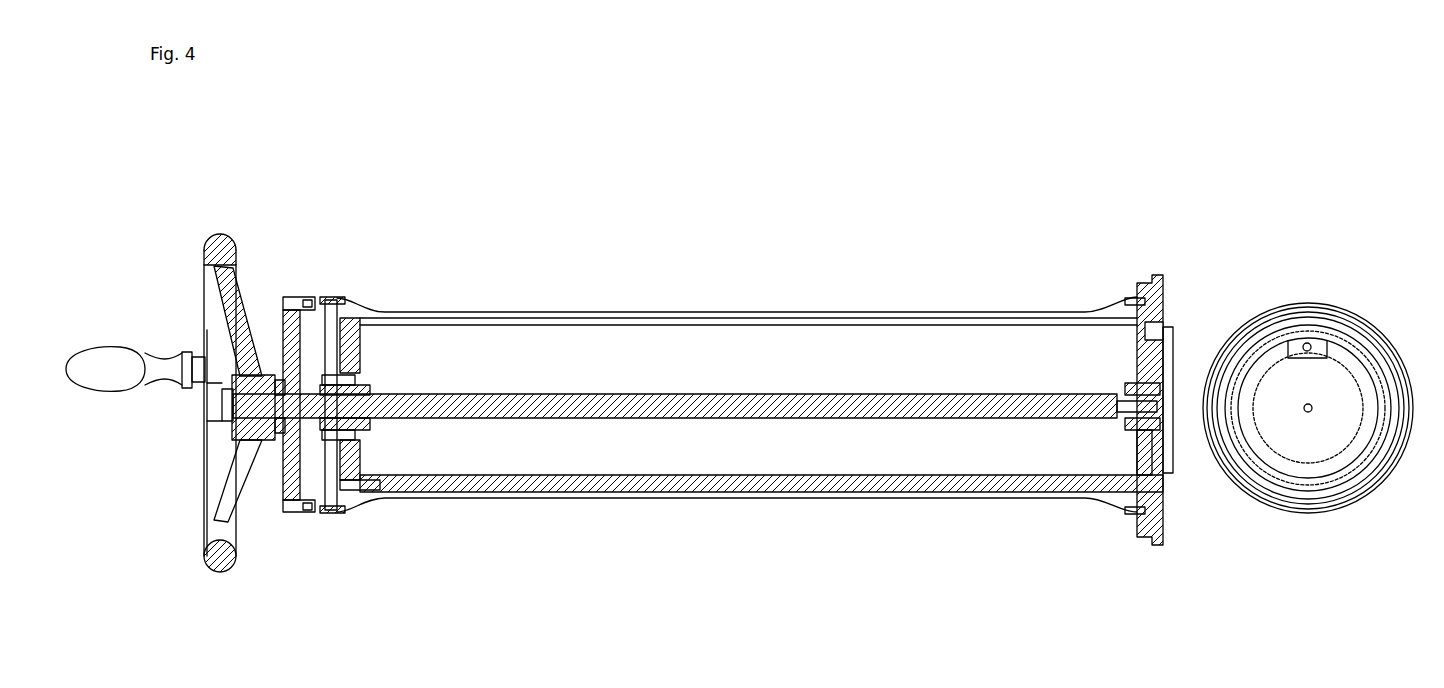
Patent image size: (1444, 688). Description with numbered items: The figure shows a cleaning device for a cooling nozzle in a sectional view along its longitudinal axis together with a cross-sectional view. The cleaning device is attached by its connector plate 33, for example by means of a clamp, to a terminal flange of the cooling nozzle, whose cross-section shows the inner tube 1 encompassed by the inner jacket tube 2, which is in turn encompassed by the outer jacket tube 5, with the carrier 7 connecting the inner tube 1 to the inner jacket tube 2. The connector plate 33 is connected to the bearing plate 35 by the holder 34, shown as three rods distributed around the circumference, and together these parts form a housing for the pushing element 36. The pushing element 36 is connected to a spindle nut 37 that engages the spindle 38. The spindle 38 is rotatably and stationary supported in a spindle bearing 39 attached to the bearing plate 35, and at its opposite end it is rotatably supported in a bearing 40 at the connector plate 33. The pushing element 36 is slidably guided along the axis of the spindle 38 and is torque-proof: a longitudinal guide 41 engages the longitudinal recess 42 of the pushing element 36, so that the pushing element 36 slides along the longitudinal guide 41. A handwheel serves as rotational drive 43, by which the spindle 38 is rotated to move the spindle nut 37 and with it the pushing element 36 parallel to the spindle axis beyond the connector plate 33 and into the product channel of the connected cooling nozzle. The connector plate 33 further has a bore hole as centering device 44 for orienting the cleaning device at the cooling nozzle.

The inner tube 1 is at (1352, 425).
The inner jacket tube 2 is at (1372, 428).
The outer jacket tube 5 is at (1397, 420).
The carrier 7 is at (1308, 343).
The connector plate 33 is at (1166, 308).
The holder 34 is at (503, 312).
The bearing plate 35 is at (285, 343).
The pushing element 36 is at (481, 478).
The spindle nut 37 is at (374, 384).
The spindle 38 is at (410, 415).
The spindle bearing 39 is at (282, 434).
The bearing 40 is at (1124, 421).
The longitudinal guide 41 is at (1286, 342).
The longitudinal recess 42 is at (638, 318).
The rotational drive 43 is at (240, 240).
The centering device 44 is at (1160, 412).